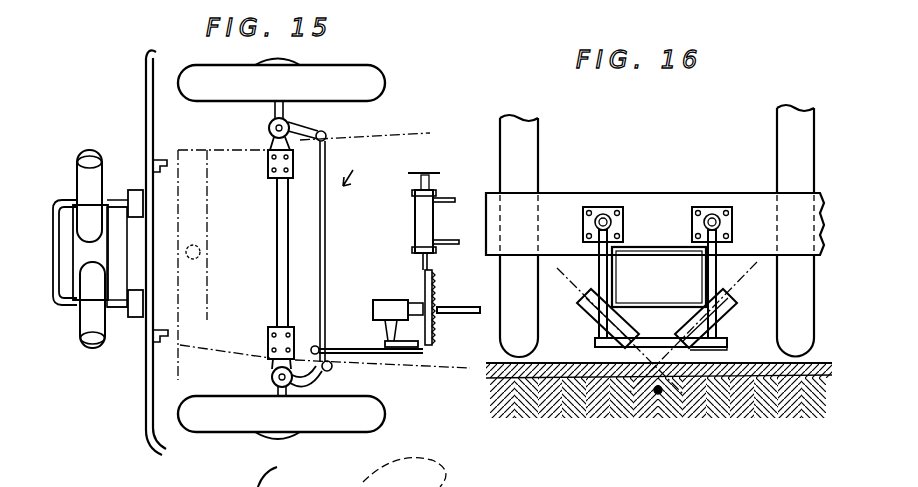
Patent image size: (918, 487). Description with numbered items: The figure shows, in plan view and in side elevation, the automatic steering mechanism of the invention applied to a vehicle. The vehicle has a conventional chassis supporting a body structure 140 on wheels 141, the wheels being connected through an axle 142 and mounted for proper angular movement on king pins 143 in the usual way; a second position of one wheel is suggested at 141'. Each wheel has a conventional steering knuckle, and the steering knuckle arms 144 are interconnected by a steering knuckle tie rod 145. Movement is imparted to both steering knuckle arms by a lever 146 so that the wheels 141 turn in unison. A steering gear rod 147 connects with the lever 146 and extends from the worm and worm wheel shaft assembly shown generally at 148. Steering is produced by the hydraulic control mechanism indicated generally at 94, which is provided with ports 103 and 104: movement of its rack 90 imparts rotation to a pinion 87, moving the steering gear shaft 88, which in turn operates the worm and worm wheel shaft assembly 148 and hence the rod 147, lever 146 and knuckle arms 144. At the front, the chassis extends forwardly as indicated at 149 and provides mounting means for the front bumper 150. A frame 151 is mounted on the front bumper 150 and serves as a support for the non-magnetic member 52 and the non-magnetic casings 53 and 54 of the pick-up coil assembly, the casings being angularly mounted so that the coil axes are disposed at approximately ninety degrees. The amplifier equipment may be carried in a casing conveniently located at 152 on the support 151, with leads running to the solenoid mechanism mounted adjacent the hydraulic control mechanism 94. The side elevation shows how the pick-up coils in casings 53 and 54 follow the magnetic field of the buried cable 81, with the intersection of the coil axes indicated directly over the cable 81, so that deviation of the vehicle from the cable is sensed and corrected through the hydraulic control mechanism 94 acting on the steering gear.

In FIG. 15, the non-magnetic support 52 is at (58, 303).
In FIG. 16, the non-magnetic support 52 is at (728, 345).
In FIG. 15, the non-magnetic casing 53 is at (88, 332).
In FIG. 16, the non-magnetic casing 53 is at (718, 312).
In FIG. 15, the non-magnetic casing 54 is at (80, 178).
In FIG. 16, the non-magnetic casing 54 is at (596, 316).
In FIG. 16, the buried cable 81 is at (657, 394).
In FIG. 15, the pinion 87 is at (436, 305).
In FIG. 15, the steering gear shaft 88 is at (464, 306).
In FIG. 15, the rack 90 is at (432, 340).
In FIG. 15, the hydraulic control mechanism 94 is at (418, 222).
In FIG. 15, the port 103 is at (446, 197).
In FIG. 15, the port 104 is at (446, 239).
In FIG. 15, the body structure 140 is at (371, 164).
In FIG. 15, the wheels 141 is at (305, 242).
In FIG. 16, the wheels 141 is at (657, 231).
In FIG. 15, the wheel (alternate position) 141' is at (387, 472).
In FIG. 15, the axle 142 is at (274, 203).
In FIG. 15, the king pins 143 is at (268, 130).
In FIG. 15, the steering knuckle arms 144 is at (312, 132).
In FIG. 15, the steering knuckle tie rod 145 is at (327, 250).
In FIG. 15, the lever 146 is at (374, 296).
In FIG. 15, the steering gear rod 147 is at (362, 354).
In FIG. 15, the worm and worm wheel shaft assembly 148 is at (388, 328).
In FIG. 15, the forward chassis extension 149 is at (158, 158).
In FIG. 15, the front bumper 150 is at (146, 126).
In FIG. 16, the front bumper 150 is at (803, 231).
In FIG. 15, the frame 151 is at (112, 198).
In FIG. 16, the frame 151 is at (690, 226).
In FIG. 15, the amplifier casing 152 is at (118, 312).
In FIG. 16, the amplifier casing 152 is at (659, 277).